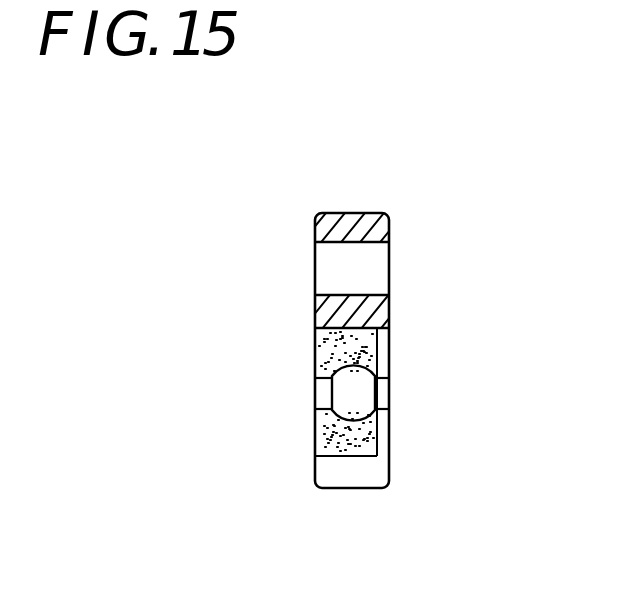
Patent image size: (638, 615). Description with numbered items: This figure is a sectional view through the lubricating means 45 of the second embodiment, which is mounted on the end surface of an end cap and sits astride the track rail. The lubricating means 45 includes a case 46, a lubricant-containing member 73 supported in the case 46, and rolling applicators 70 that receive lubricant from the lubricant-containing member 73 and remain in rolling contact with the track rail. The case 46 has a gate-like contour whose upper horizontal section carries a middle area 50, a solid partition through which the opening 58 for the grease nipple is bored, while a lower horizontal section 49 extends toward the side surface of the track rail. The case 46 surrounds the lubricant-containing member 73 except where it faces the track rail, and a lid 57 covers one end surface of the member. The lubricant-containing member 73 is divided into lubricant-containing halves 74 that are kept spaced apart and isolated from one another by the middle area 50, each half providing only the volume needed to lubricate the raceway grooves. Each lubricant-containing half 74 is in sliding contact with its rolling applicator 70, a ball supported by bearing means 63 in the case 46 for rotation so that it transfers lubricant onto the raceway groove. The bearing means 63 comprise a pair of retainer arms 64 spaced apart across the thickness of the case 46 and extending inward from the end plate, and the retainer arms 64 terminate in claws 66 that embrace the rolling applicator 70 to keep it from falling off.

The lubricating means 45 is at (396, 245).
The case 46 is at (342, 228).
The lower horizontal section 49 is at (353, 475).
The middle area 50 is at (332, 312).
The lid 57 is at (382, 442).
The opening 58 is at (370, 273).
The bearing means 63 is at (392, 397).
The retainer arm 64 is at (320, 400).
The claw 66 is at (324, 391).
The rolling applicator 70 is at (357, 385).
The lubricant-containing member 73 is at (322, 347).
The lubricant-containing half 74 is at (332, 436).